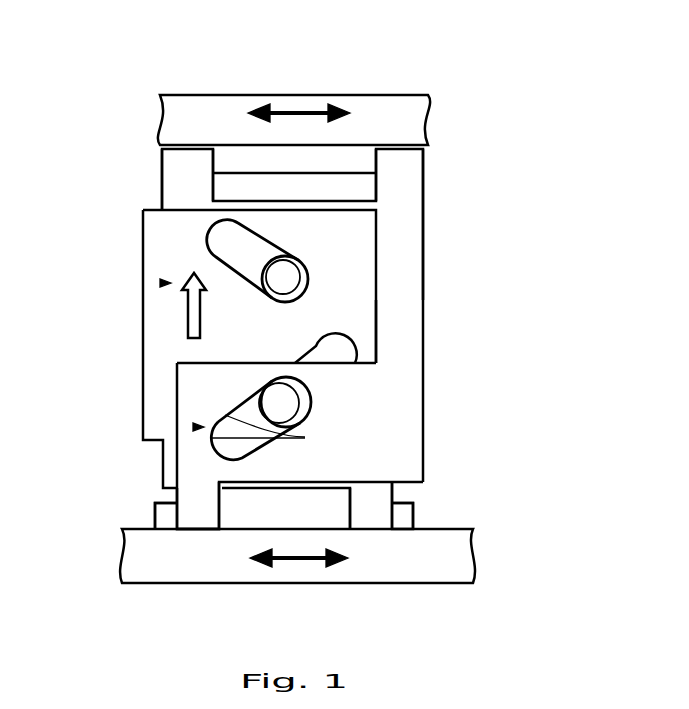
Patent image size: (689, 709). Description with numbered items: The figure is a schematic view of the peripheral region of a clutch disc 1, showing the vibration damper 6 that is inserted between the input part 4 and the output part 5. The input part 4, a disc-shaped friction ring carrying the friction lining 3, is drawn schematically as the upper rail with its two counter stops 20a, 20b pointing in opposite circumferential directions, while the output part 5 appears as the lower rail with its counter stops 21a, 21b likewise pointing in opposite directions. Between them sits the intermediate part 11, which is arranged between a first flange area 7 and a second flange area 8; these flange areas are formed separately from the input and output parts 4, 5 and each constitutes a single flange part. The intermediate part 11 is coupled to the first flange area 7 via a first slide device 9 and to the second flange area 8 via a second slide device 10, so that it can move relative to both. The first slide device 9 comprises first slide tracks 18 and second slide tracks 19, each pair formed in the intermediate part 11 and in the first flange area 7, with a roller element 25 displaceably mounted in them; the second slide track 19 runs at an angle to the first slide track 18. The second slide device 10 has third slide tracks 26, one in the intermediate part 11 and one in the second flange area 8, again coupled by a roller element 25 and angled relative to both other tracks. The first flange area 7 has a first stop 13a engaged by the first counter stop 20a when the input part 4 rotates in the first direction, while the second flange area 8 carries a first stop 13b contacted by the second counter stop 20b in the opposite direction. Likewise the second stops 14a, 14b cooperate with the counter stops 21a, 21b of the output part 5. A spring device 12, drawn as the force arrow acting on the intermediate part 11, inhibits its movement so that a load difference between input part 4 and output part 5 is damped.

The clutch disc 1 is at (577, 84).
The friction lining 3 is at (336, 119).
The input part 4 is at (408, 125).
The output part 5 is at (448, 560).
The vibration damper 6 is at (558, 265).
The first flange area 7 is at (173, 197).
The second flange area 8 is at (393, 387).
The first slide device 9 is at (160, 283).
The second slide device 10 is at (193, 427).
The intermediate part 11 is at (348, 307).
The spring device 12 is at (188, 307).
The first stop 13a is at (173, 162).
The first stop 13b is at (408, 163).
The second stop 14a is at (378, 515).
The second stop 14b is at (200, 520).
The first slide track 18 is at (157, 259).
The second slide track 19 is at (252, 266).
The first counter stop 20a is at (215, 167).
The second counter stop 20b is at (367, 163).
The first counter stop 21a is at (173, 517).
The second counter stop 21b is at (405, 518).
The roller element 25 is at (288, 278).
The third slide track 26 is at (355, 361).